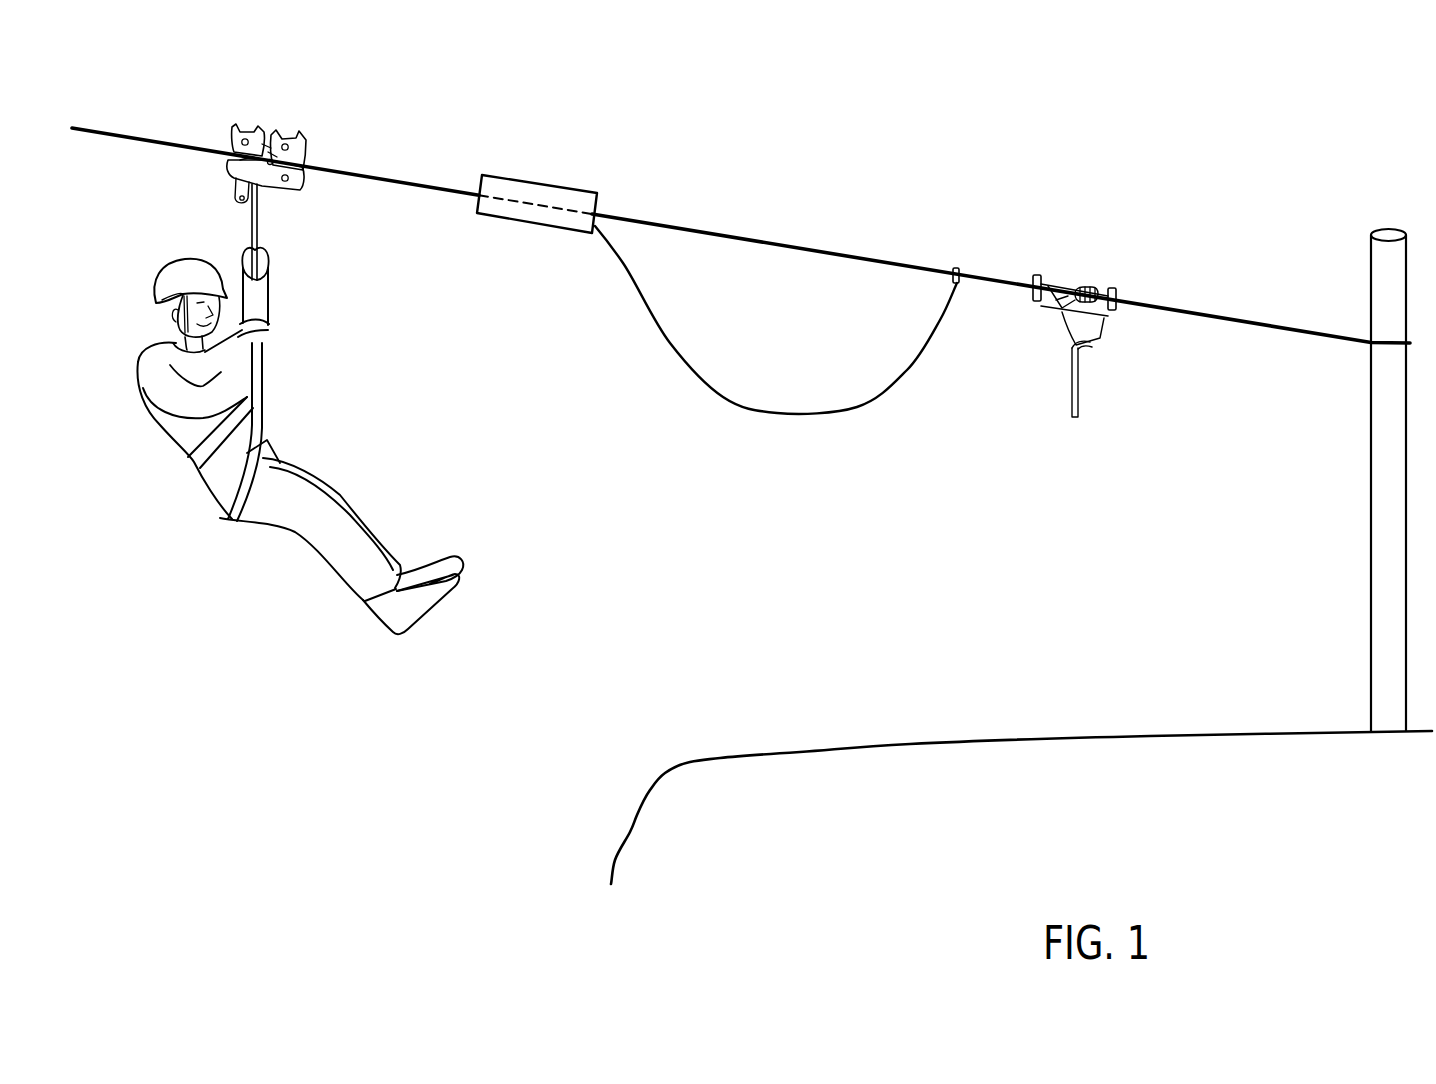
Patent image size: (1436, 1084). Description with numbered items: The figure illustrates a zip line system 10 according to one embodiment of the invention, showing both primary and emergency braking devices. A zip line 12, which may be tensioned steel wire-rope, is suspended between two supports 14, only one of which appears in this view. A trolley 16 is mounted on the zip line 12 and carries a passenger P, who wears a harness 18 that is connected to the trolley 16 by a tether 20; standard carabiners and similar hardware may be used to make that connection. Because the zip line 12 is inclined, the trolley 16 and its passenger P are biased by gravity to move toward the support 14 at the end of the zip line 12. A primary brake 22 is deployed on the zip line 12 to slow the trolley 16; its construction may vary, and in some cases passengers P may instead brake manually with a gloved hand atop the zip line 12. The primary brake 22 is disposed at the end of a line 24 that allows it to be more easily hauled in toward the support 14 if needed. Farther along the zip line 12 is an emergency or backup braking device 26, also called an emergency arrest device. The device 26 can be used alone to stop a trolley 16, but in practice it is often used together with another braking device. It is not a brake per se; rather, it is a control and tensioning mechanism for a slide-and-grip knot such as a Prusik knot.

The zip line system 10 is at (994, 146).
The zip line 12 is at (137, 126).
The support 14 is at (1380, 265).
The trolley 16 is at (297, 109).
The harness 18 is at (256, 404).
The tether 20 is at (252, 220).
The primary brake 22 is at (571, 197).
The line 24 is at (750, 400).
The emergency or backup braking device 26 is at (1105, 287).
The passenger P is at (150, 346).